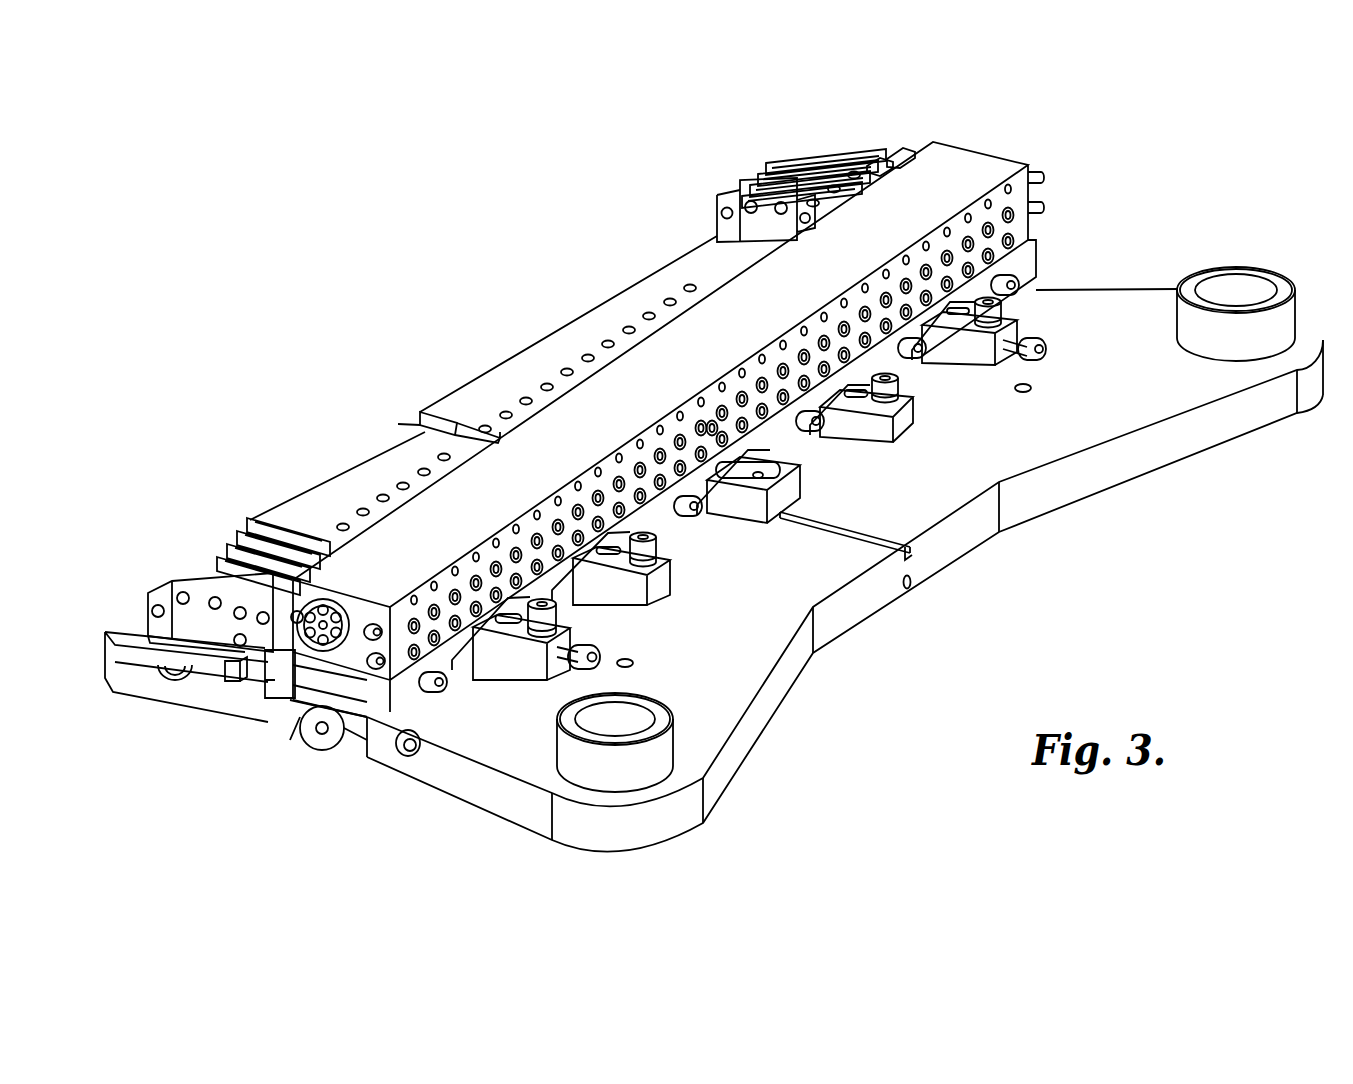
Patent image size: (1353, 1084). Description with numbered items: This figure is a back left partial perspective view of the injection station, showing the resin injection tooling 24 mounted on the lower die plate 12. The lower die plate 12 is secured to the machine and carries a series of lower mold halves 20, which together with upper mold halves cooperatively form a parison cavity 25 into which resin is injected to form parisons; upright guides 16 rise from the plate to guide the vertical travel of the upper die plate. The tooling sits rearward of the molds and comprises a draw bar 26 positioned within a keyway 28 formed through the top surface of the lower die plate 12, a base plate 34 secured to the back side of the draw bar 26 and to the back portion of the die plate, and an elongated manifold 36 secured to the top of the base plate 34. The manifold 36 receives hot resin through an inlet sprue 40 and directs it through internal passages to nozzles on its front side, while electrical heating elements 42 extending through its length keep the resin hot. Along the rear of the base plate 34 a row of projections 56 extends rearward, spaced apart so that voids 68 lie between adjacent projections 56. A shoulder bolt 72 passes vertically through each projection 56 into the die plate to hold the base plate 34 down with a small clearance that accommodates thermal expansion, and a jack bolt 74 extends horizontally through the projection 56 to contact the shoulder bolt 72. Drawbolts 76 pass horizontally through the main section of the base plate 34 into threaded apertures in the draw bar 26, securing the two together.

The lower die plate 12 is at (640, 833).
The upright guides 16 is at (677, 743).
The lower mold half 20 is at (723, 230).
The resin injection tooling 24 is at (750, 563).
The parison cavity 25 is at (843, 190).
The draw bar 26 is at (277, 667).
The keyway 28 is at (272, 690).
The base plate 34 is at (360, 690).
The manifold 36 is at (952, 150).
The inlet sprue 40 is at (712, 421).
The heating elements 42 is at (372, 632).
The projections 56 is at (543, 657).
The voids 68 is at (1024, 379).
The shoulder bolt 72 is at (552, 617).
The jack bolt 74 is at (598, 664).
The drawbolts 76 is at (441, 690).